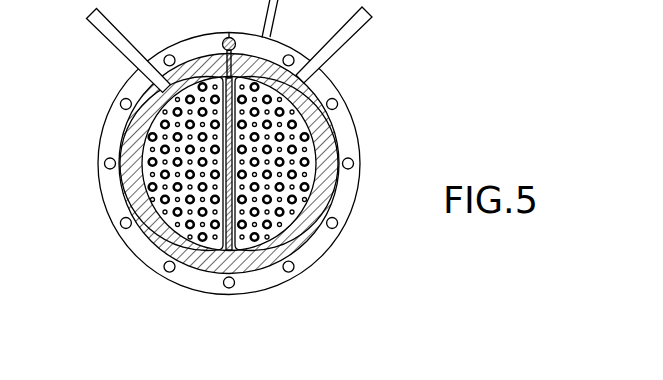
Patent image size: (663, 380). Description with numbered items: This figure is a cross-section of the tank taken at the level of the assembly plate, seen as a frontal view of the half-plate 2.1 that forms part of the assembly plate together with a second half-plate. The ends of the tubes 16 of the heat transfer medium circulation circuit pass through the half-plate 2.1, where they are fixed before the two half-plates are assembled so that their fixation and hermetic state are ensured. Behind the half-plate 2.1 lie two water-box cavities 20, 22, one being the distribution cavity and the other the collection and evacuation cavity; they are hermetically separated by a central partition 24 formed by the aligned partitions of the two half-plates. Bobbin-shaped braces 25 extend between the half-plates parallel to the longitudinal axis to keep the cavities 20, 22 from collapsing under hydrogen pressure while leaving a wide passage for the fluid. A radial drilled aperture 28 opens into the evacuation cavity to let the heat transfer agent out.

The half-plate 2.1 is at (327, 139).
The tubes 16 is at (140, 236).
The cavity 20 is at (145, 150).
The cavity 22 is at (340, 112).
The partition 24 is at (230, 249).
The braces 25 is at (313, 244).
The radial drilled aperture 28 is at (395, 43).